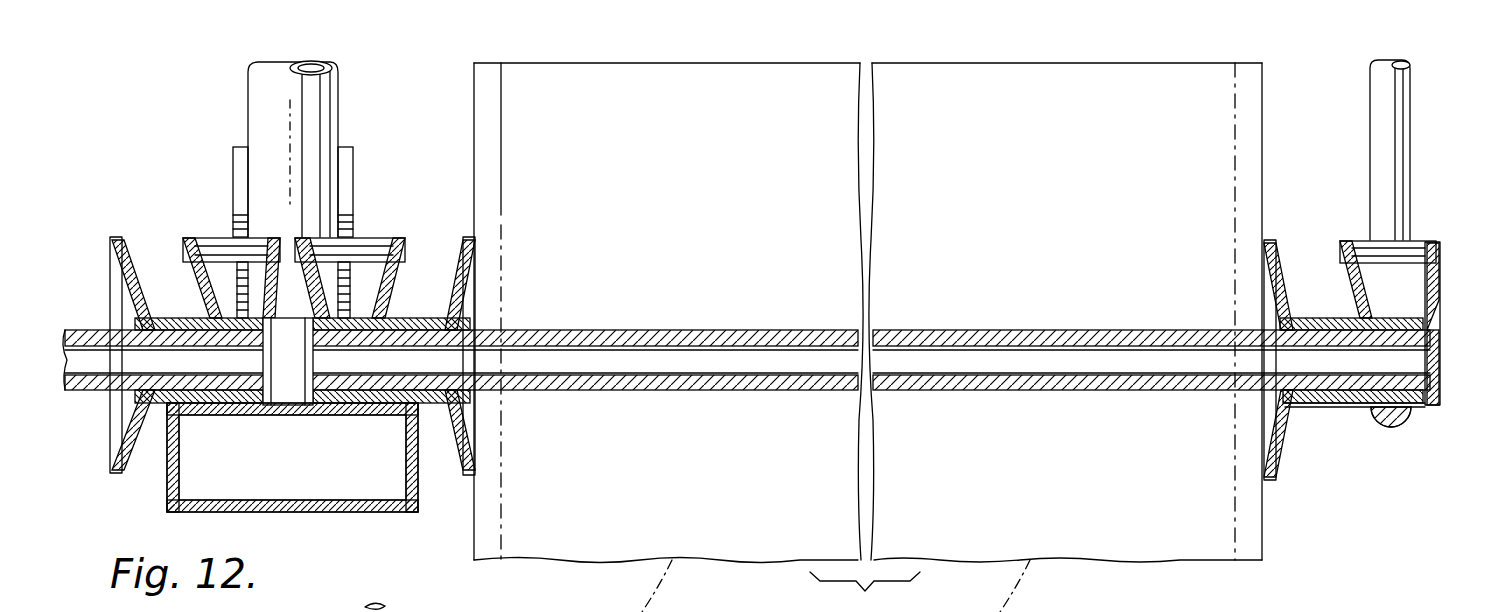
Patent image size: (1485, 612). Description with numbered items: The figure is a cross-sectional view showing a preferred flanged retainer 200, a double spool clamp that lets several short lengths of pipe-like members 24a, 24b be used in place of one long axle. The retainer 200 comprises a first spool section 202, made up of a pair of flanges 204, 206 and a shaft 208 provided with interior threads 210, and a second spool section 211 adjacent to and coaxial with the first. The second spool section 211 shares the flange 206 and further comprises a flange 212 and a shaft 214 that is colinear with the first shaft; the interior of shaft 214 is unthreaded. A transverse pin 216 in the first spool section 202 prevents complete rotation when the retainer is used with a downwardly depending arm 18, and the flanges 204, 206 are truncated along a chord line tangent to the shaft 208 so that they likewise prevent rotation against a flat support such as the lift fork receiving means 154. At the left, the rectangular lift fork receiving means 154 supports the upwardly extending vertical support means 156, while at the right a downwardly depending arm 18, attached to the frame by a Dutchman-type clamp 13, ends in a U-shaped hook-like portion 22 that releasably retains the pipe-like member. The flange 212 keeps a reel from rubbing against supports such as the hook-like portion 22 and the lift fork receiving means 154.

The downwardly depending arm 18 is at (1412, 105).
The U-shaped hook-like portion 22 is at (1398, 442).
The pipe-like member 24a is at (85, 394).
The pipe-like member 24b is at (765, 400).
The lift fork receiving means 154 is at (340, 505).
The vertical support means 156 is at (262, 95).
The flanged retainer 200 is at (148, 220).
The first spool section 202 is at (320, 405).
The flange 204 is at (298, 256).
The flange 206 is at (410, 250).
The shaft 208 is at (205, 285).
The interior threads 210 is at (238, 398).
The second spool section 211 is at (128, 428).
The flange 212 is at (120, 238).
The shaft 214 is at (175, 318).
The transverse pin 216 is at (213, 238).
The two-piece Dutchman-type clamp 13 is at (1426, 497).